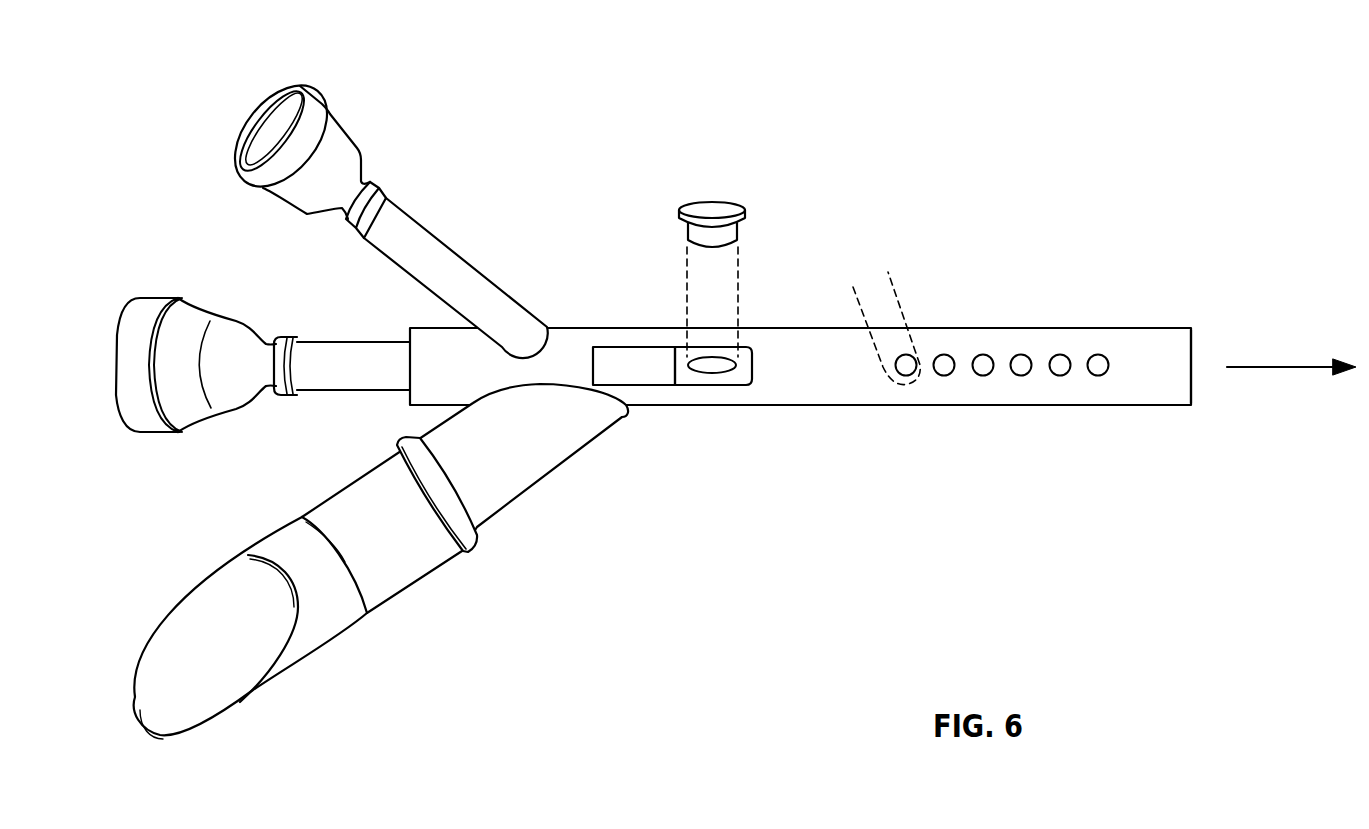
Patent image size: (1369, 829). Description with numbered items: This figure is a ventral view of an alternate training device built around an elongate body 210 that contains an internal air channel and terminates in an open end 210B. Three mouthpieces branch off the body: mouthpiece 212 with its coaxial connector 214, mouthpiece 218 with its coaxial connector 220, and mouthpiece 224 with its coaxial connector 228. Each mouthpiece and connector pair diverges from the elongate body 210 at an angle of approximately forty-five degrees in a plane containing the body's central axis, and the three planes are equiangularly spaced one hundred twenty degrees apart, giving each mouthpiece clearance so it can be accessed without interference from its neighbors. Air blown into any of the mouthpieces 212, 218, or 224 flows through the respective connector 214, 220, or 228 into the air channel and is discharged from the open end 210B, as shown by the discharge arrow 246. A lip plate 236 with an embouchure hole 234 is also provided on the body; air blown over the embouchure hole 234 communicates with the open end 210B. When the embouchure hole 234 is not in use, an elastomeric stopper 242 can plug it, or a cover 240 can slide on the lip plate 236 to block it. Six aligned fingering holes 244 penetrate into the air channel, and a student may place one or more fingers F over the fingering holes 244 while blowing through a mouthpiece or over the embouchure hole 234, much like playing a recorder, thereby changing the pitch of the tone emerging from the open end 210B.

The elongate body 210 is at (1093, 406).
The open end 210B is at (1192, 393).
The mouthpiece 212 is at (345, 133).
The coaxial connector 214 is at (472, 261).
The mouthpiece 218 is at (210, 417).
The coaxial connector 220 is at (369, 341).
The mouthpiece 224 is at (419, 582).
The coaxial connector 228 is at (530, 483).
The embouchure hole 234 is at (723, 374).
The lip plate 236 is at (744, 343).
The cover 240 is at (630, 346).
The elastomeric stopper 242 is at (712, 201).
The fingering holes 244 is at (983, 354).
The discharge arrow 246 is at (1284, 367).
The fingers F is at (910, 299).